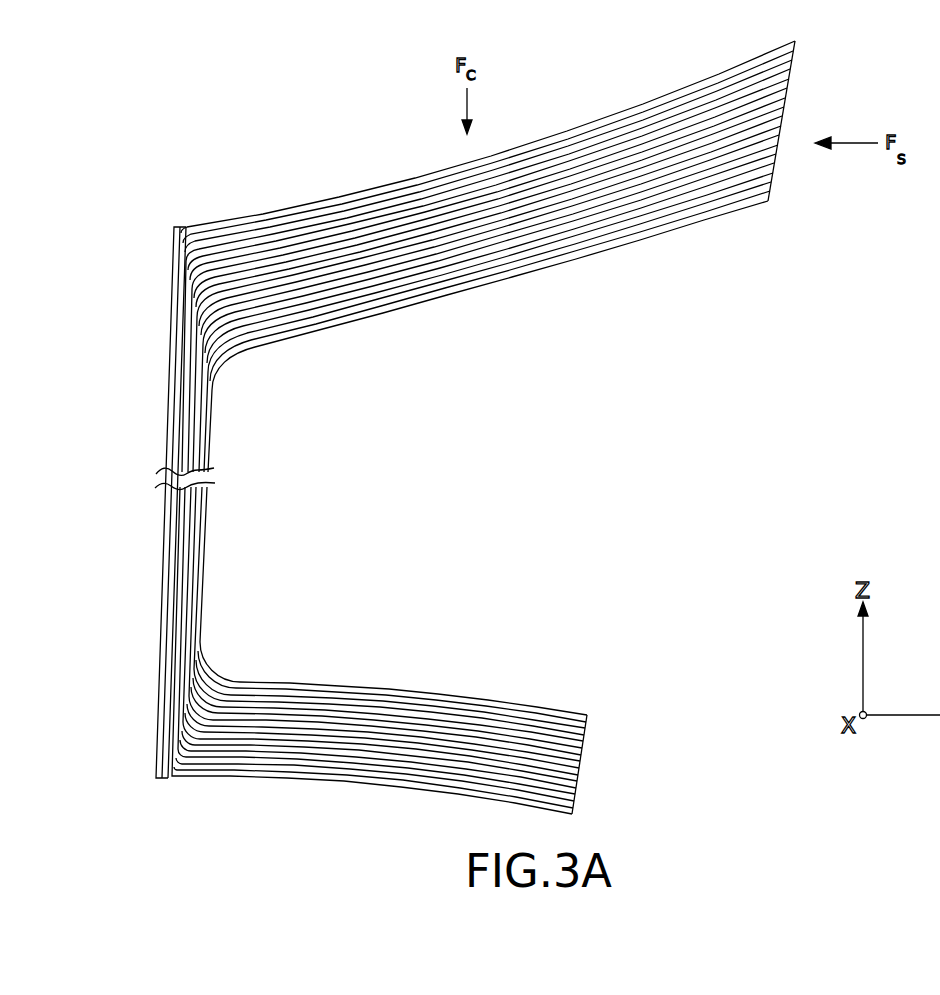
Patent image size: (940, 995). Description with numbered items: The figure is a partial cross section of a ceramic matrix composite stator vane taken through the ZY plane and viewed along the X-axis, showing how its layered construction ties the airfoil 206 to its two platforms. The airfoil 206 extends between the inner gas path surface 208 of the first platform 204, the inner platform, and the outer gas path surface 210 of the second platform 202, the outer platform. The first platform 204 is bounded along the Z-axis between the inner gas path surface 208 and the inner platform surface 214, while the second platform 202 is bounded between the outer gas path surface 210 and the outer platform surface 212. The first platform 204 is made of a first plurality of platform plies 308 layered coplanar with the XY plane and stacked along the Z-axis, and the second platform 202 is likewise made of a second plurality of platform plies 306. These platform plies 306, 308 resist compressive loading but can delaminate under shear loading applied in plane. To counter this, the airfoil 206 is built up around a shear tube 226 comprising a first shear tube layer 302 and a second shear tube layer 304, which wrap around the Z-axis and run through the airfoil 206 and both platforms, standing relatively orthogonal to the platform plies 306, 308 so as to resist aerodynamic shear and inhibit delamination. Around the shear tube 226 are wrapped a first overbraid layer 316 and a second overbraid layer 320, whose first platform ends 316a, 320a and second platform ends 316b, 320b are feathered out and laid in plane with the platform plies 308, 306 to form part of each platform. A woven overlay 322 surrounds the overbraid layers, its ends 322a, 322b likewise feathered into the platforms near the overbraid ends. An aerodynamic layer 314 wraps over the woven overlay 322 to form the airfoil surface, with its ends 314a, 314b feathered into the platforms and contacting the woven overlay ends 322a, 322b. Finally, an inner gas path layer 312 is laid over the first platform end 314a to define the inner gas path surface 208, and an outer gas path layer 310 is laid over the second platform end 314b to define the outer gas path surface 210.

The second platform 202 is at (822, 45).
The first platform 204 is at (646, 814).
The airfoil 206 is at (300, 488).
The inner gas path surface 208 is at (397, 687).
The outer gas path surface 210 is at (627, 253).
The outer platform surface 212 is at (593, 120).
The inner platform surface 214 is at (410, 790).
The shear tube 226 is at (146, 215).
The first shear tube layer 302 is at (173, 279).
The second shear tube layer 304 is at (176, 305).
The second plurality of platform plies 306 is at (783, 90).
The first plurality of platform plies 308 is at (575, 775).
The outer gas path layer 310 is at (768, 205).
The inner gas path layer 312 is at (527, 708).
The aerodynamic layer 314 is at (195, 557).
The first overbraid layer 316 is at (173, 607).
The second overbraid layer 320 is at (170, 625).
The woven overlay 322 is at (195, 410).
The first platform end of aerodynamic layer 314a is at (587, 718).
The first platform end of first overbraid layer 316a is at (253, 707).
The first platform end of second overbraid layer 320a is at (303, 703).
The first platform end of woven overlay 322a is at (413, 703).
The second platform end of aerodynamic layer 314b is at (407, 308).
The second platform end of first overbraid layer 316b is at (537, 252).
The second platform end of second overbraid layer 320b is at (575, 250).
The second platform end of woven overlay 322b is at (490, 277).